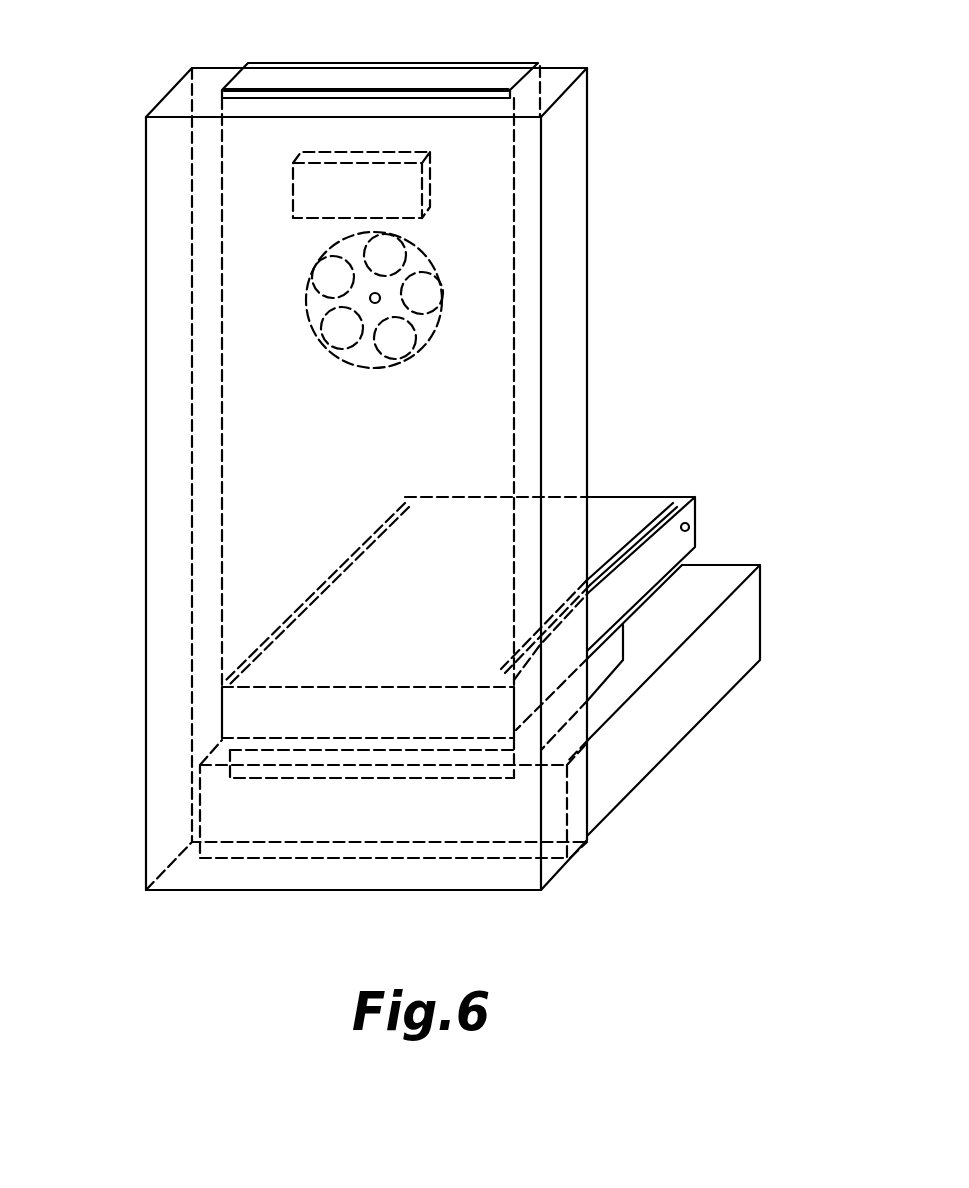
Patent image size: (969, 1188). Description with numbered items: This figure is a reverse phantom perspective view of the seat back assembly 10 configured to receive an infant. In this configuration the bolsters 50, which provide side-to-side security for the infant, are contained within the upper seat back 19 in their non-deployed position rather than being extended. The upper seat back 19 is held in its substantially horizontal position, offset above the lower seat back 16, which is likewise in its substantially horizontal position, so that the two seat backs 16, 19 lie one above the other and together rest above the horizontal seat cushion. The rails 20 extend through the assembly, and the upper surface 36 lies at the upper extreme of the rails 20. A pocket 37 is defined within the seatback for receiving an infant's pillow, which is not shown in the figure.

The seat back assembly 10 is at (677, 199).
The lower seat back 16 is at (608, 656).
The upper seat back 19 is at (327, 657).
The rails 20 is at (383, 542).
The upper surface 36 is at (337, 287).
The pocket 37 is at (353, 189).
The bolsters 50 is at (670, 542).